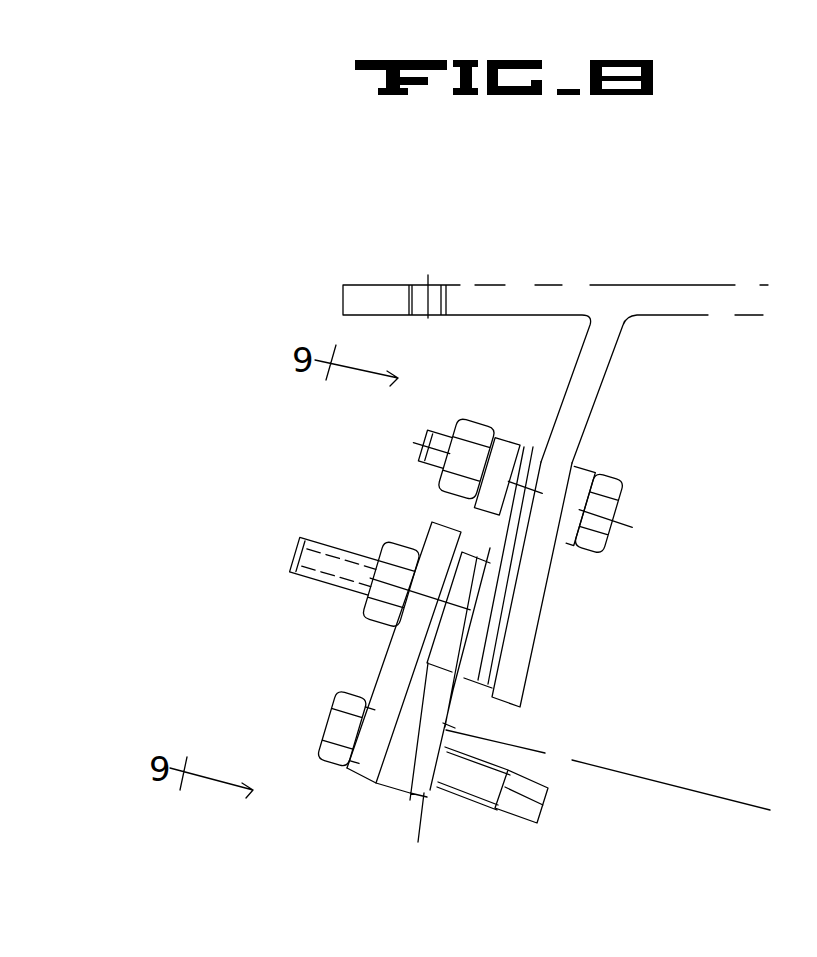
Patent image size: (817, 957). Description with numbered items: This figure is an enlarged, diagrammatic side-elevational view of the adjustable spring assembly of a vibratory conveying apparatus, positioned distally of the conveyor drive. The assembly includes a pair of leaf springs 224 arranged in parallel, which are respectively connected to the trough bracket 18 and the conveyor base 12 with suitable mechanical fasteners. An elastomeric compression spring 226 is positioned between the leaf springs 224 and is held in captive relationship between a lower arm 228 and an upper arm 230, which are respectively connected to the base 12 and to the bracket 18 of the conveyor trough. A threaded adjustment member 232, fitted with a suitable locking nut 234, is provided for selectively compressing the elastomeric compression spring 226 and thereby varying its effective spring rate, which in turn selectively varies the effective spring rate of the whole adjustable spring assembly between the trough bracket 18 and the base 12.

The base 12 is at (650, 775).
The trough bracket 18 is at (680, 283).
The leaf springs 224 is at (493, 537).
The elastomeric compression spring 226 is at (480, 672).
The lower arm 228 is at (383, 666).
The upper arm 230 is at (548, 600).
The threaded adjustment member 232 is at (330, 540).
The locking nut 234 is at (365, 607).